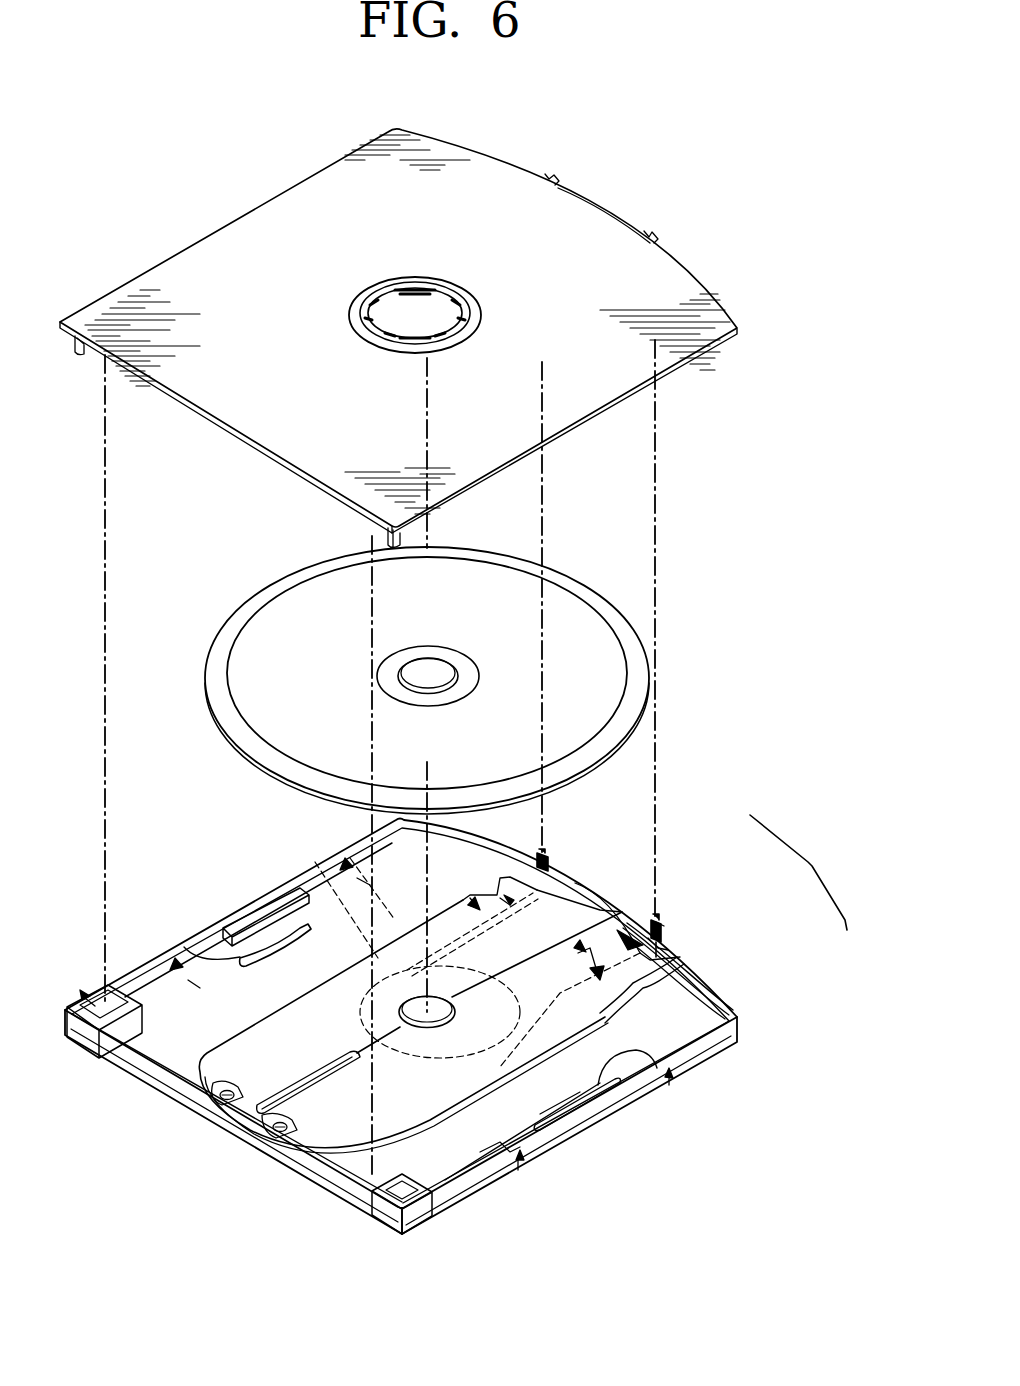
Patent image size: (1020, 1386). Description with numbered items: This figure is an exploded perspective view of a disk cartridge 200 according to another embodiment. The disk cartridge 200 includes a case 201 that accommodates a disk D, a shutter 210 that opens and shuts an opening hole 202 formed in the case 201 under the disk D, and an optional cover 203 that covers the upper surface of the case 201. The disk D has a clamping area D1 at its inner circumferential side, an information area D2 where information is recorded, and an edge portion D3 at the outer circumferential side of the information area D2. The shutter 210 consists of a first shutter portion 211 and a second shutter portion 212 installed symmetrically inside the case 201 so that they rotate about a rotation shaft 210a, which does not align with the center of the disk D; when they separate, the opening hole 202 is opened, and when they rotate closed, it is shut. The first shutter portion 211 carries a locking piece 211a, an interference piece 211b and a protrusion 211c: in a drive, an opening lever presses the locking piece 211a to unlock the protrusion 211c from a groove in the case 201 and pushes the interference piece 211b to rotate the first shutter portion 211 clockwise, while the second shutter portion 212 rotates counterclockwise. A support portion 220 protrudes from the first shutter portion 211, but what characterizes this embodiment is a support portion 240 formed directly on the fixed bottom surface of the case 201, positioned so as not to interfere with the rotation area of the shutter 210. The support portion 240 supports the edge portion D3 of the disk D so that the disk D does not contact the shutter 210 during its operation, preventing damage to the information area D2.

The disk cartridge 200 is at (716, 205).
The case 201 is at (637, 1107).
The opening hole 202 is at (313, 862).
The cover 203 is at (226, 247).
The shutter 210 is at (738, 930).
The rotation shaft 210a is at (627, 898).
The first shutter portion 211 is at (727, 997).
The locking piece 211a is at (673, 950).
The interference piece 211b is at (680, 957).
The protrusion 211c is at (670, 923).
The second shutter portion 212 is at (577, 883).
The support portion 220 is at (522, 873).
The support portion 240 is at (184, 947).
The disk D is at (262, 620).
The clamping area D1 is at (445, 655).
The information area D2 is at (589, 616).
The edge portion D3 is at (630, 640).